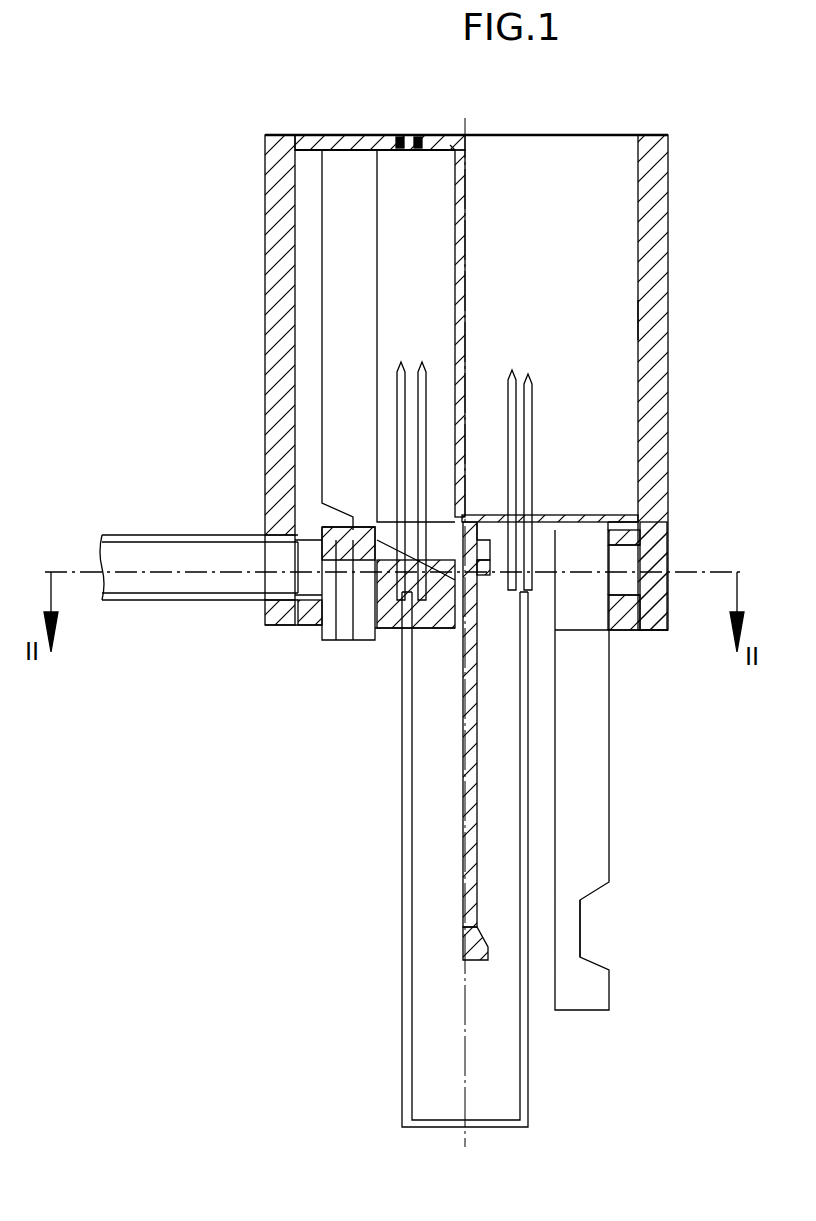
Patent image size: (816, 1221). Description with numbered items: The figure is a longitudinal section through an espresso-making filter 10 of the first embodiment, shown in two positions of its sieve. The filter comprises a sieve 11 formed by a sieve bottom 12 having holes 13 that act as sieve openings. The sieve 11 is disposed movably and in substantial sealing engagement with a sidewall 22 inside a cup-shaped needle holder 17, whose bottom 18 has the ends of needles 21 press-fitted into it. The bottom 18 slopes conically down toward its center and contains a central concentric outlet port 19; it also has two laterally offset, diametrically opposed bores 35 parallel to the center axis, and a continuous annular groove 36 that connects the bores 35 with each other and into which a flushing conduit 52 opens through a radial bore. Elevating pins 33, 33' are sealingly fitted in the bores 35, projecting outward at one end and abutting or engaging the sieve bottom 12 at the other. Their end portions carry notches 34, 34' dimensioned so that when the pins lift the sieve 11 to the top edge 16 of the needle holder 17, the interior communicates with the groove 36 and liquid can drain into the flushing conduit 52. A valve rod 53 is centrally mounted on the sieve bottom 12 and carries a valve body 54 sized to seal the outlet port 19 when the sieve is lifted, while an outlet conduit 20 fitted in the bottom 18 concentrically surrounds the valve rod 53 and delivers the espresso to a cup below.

The espresso-making filter 10 is at (222, 360).
The sieve 11 is at (349, 108).
The sieve bottom 12 is at (315, 134).
The holes 13 is at (418, 134).
The top edge 16 is at (652, 114).
The needle holder 17 is at (652, 218).
The bottom 18 is at (538, 542).
The outlet port 19 is at (490, 568).
The outlet conduit 20 is at (528, 777).
The needles 21 is at (524, 432).
The sidewall 22 is at (632, 330).
The elevating pin 33 is at (617, 766).
The elevating pin 33' is at (348, 620).
The notch 34 is at (633, 917).
The notch 34' is at (319, 620).
The bores 35 is at (286, 640).
The annular groove 36 is at (272, 580).
The flushing conduit 52 is at (134, 602).
The valve rod 53 is at (478, 698).
The valve body 54 is at (488, 958).